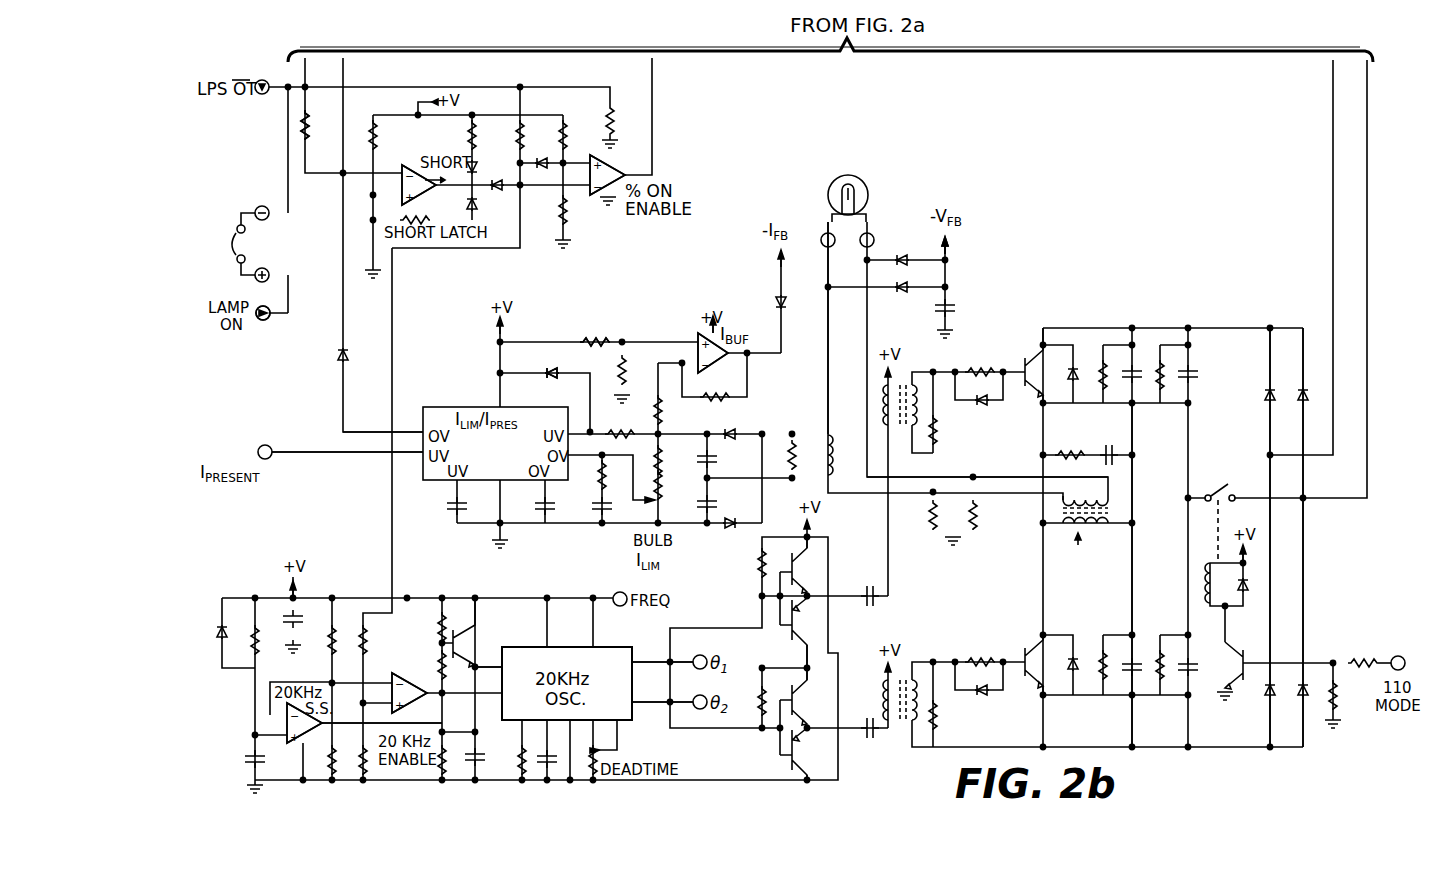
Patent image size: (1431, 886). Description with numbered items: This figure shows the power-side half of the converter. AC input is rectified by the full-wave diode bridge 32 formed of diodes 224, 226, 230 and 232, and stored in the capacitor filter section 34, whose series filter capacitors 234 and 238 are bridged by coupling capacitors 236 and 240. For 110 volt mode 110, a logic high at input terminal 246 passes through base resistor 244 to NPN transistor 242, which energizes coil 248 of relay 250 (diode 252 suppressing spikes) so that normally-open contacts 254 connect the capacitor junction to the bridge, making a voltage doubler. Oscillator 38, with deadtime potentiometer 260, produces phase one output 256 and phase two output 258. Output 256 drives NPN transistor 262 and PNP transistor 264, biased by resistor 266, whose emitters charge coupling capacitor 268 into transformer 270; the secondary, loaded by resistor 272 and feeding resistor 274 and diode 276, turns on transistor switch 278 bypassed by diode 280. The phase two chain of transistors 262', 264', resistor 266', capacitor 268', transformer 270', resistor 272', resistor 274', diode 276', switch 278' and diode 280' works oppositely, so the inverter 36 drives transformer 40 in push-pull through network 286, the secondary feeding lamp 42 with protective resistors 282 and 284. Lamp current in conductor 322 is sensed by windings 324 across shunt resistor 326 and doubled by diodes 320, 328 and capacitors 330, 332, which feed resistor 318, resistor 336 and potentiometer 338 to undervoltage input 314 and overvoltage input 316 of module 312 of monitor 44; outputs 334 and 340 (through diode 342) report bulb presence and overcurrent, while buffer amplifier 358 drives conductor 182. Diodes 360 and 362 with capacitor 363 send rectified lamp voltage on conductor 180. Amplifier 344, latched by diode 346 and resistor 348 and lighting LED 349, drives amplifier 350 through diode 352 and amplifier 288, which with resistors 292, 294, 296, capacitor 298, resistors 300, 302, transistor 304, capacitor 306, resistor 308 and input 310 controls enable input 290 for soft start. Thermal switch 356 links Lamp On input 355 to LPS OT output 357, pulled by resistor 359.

The LPS OT output 357 is at (262, 96).
The heat sink thermal switch 356 is at (230, 244).
The Lamp On input 355 is at (268, 322).
The amplifier 344 is at (382, 164).
The light emitting diode 349 is at (482, 164).
The diode 352 is at (476, 168).
The diode 346 is at (477, 204).
The resistor 348 is at (422, 219).
The resistor 359 is at (606, 109).
The amplifier 350 is at (618, 152).
The diode 342 is at (347, 354).
The output 340 is at (342, 412).
The output 334 is at (360, 452).
The circuit module 312 is at (482, 396).
The undervoltage input 314 is at (588, 411).
The current and voltage monitor 44 is at (629, 332).
The buffer amplifier 358 is at (696, 334).
The series resistor 318 is at (622, 434).
The overvoltage input 316 is at (598, 474).
The resistor 336 is at (678, 472).
The potentiometer 338 is at (715, 532).
The diode 328 is at (759, 536).
The diode 320 is at (732, 433).
The windings 324 is at (817, 432).
The shunt resistor 326 is at (830, 480).
The capacitor 330 is at (718, 455).
The capacitor 332 is at (714, 502).
The lamp conductor 322 is at (827, 374).
The conductor 182 is at (780, 273).
The lamp 42 is at (830, 184).
The diode 360 is at (918, 245).
The diode 362 is at (909, 295).
The conductor 180 is at (950, 256).
The capacitor 363 is at (952, 310).
The transformer 270 is at (913, 379).
The resistor 274 is at (985, 361).
The diode 276 is at (1003, 412).
The resistor 272 is at (957, 433).
The transistor switch 278 is at (1024, 358).
The inverter 36 is at (1022, 479).
The resistor 282 is at (932, 520).
The resistor 284 is at (983, 515).
The transformer 40 is at (1082, 534).
The resistor and capacitor network 286 is at (1078, 440).
The diode 280 is at (1095, 400).
The coupling capacitor 236 is at (1140, 390).
The filter capacitor 234 is at (1192, 386).
The diode 224 is at (1298, 390).
The diode 230 is at (1272, 406).
The relay 250 is at (1224, 470).
The normally-open contacts 254 is at (1225, 470).
The capacitor filter section 34 is at (1169, 492).
The coil 248 is at (1205, 578).
The diode 252 is at (1250, 592).
The full-wave rectifying diode bridge 32 is at (1297, 601).
The coupling capacitor 240 is at (1142, 654).
The filter capacitor 238 is at (1196, 654).
The diode 280' is at (1093, 689).
The NPN transistor 242 is at (1230, 686).
The diode 232 is at (1270, 700).
The diode 226 is at (1303, 704).
The base resistor 244 is at (1362, 645).
The input terminal 246 is at (1398, 656).
The 110 volt AC mode 110 is at (1397, 688).
The transistor switch 278' is at (1019, 647).
The transformer 270' is at (920, 674).
The resistor 274' is at (989, 649).
The diode 276' is at (1003, 706).
The resistor 272' is at (960, 722).
The coupling capacitor 268 is at (894, 604).
The coupling capacitor 268' is at (892, 744).
The NPN transistor 262 is at (831, 565).
The PNP transistor 264 is at (831, 633).
The biasing resistor 266 is at (736, 567).
The NPN transistor 262' is at (839, 696).
The PNP transistor 264' is at (842, 759).
The biasing resistor 266' is at (757, 678).
The phase one output 256 is at (648, 662).
The phase two output 258 is at (641, 702).
The oscillator 38 is at (569, 647).
The potentiometer 260 is at (602, 750).
The capacitor 306 is at (478, 754).
The resistor 302 is at (436, 600).
The PNP transistor 304 is at (468, 624).
The input terminal 310 is at (490, 664).
The resistor 300 is at (440, 650).
The amplifier 288 is at (392, 680).
The enable input 290 is at (450, 702).
The divider resistor 292 is at (328, 652).
The resistor 296 is at (250, 638).
The capacitor 298 is at (255, 773).
The divider resistor 294 is at (342, 770).
The discharge resistor 308 is at (435, 766).